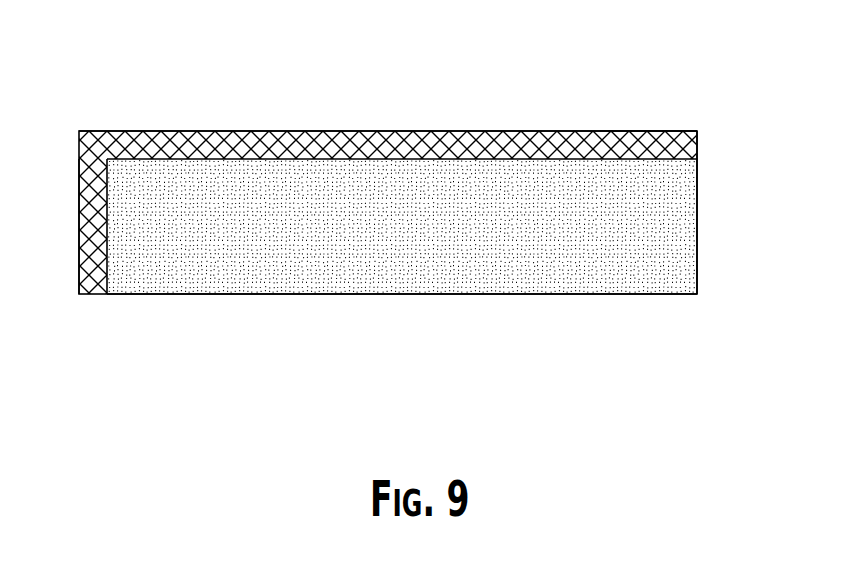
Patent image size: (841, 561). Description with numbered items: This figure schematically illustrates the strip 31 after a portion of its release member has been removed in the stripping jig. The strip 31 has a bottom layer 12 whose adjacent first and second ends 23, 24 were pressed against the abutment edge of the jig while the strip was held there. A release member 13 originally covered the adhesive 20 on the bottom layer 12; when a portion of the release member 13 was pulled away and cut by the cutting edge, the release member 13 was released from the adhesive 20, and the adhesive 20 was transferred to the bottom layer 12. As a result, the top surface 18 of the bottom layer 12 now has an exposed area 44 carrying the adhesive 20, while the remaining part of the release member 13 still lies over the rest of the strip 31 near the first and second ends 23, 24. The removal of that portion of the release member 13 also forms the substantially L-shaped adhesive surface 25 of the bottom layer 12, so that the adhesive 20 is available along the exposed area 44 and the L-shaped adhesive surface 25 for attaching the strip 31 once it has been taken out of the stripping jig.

The strip 31 is at (195, 107).
The second end 24 is at (375, 131).
The release member 13 is at (500, 131).
The substantially L-shaped adhesive surface 25 is at (657, 131).
The first end 23 is at (79, 215).
The top surface 18 is at (385, 275).
The exposed area 44 is at (162, 277).
The bottom layer 12 is at (485, 275).
The adhesive 20 is at (575, 267).